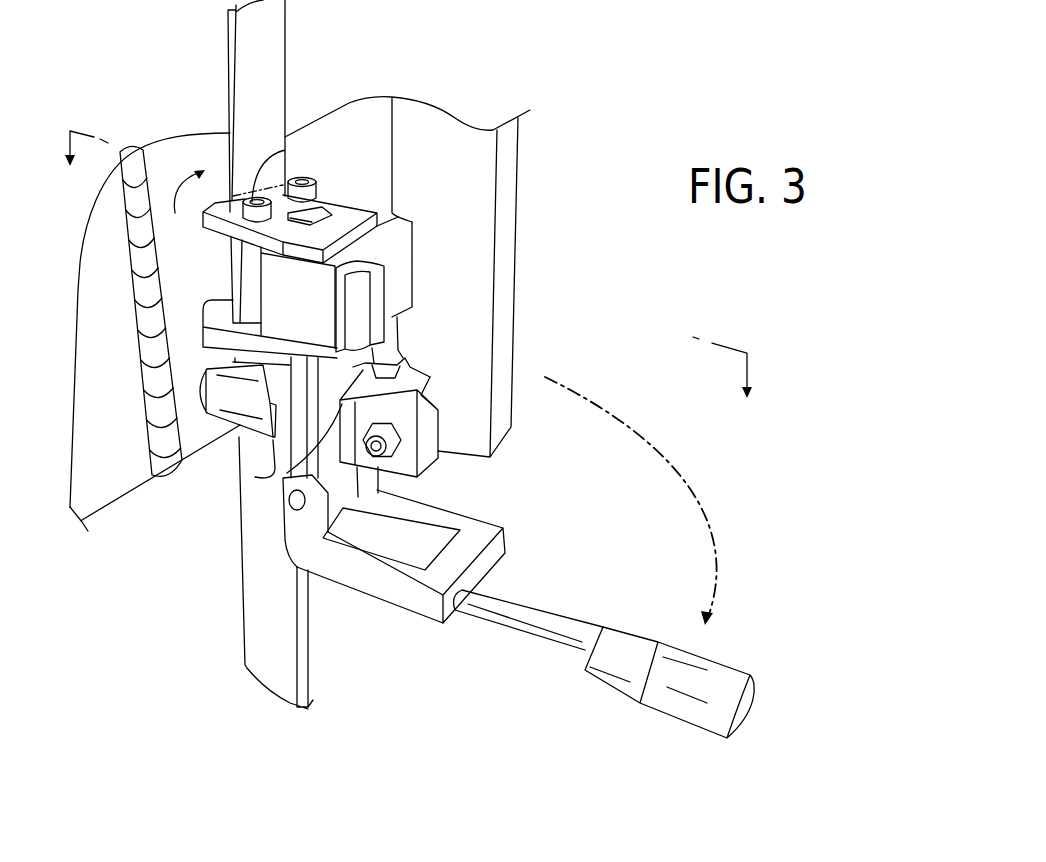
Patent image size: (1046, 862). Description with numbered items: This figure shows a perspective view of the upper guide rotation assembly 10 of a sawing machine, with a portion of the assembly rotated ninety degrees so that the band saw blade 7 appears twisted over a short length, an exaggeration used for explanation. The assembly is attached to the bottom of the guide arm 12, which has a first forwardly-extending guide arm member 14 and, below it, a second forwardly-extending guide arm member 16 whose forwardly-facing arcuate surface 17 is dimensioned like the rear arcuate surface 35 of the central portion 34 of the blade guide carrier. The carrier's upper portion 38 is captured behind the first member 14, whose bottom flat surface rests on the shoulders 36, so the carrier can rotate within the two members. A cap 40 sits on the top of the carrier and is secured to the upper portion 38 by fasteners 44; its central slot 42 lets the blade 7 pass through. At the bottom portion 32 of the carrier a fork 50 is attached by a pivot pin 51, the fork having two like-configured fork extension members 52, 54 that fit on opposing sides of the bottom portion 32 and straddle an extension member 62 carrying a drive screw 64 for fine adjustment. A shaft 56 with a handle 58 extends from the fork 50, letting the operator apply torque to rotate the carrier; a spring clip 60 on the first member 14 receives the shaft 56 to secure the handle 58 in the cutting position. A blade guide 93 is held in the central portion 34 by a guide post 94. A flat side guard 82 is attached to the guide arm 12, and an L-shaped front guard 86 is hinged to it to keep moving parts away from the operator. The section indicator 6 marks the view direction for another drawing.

The section view direction (FIG. 6) 6 is at (406, 263).
The band saw blade 7 is at (270, 43).
The upper guide rotation assembly 10 is at (565, 145).
The guide arm 12 is at (428, 125).
The first forwardly-extending guide arm member 14 is at (402, 247).
The second forwardly-extending guide arm member 16 is at (392, 361).
The forwardly-facing arcuate surface 17 is at (408, 377).
The bottom portion of the blade guide carrier 32 is at (343, 490).
The central portion of the blade guide carrier 34 is at (280, 453).
The rear arcuate surface 35 is at (300, 488).
The shoulders 36 is at (213, 340).
The upper portion of the blade guide carrier 38 is at (240, 280).
The cap 40 is at (352, 207).
The slot 42 is at (320, 212).
The fasteners 44 is at (302, 176).
The fork 50 is at (497, 553).
The pivot pin 51 is at (288, 506).
The fork extension member 52 is at (450, 513).
The fork extension member 54 is at (403, 598).
The shaft 56 is at (520, 610).
The handle 58 is at (705, 678).
The spring clip 60 is at (392, 294).
The extension member 62 is at (433, 434).
The drive screw 64 is at (386, 452).
The side guard 82 is at (163, 142).
The front guard 86 is at (90, 267).
The blade guide 93 is at (220, 393).
The guide post 94 is at (203, 380).